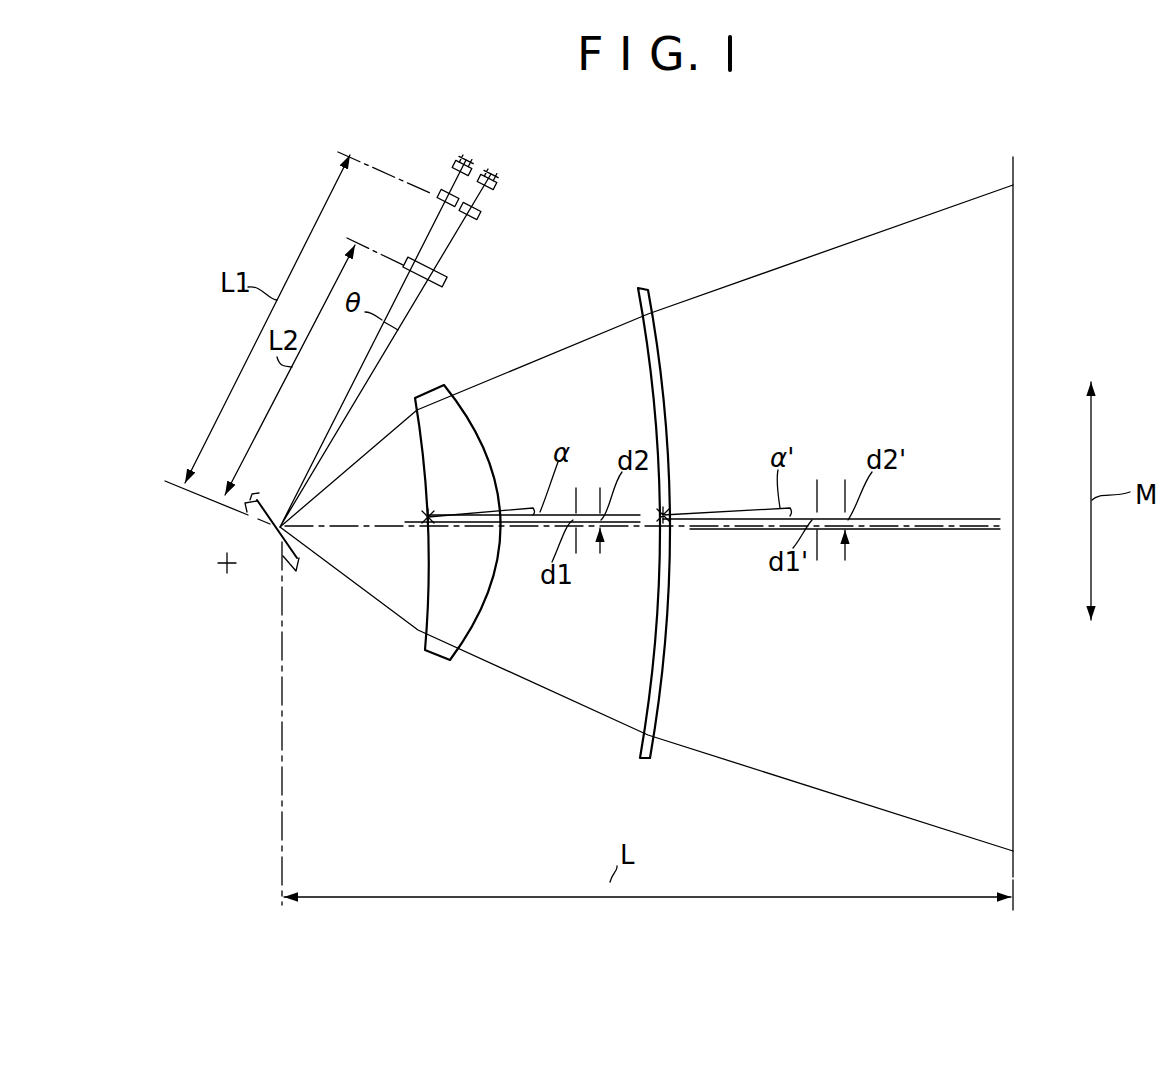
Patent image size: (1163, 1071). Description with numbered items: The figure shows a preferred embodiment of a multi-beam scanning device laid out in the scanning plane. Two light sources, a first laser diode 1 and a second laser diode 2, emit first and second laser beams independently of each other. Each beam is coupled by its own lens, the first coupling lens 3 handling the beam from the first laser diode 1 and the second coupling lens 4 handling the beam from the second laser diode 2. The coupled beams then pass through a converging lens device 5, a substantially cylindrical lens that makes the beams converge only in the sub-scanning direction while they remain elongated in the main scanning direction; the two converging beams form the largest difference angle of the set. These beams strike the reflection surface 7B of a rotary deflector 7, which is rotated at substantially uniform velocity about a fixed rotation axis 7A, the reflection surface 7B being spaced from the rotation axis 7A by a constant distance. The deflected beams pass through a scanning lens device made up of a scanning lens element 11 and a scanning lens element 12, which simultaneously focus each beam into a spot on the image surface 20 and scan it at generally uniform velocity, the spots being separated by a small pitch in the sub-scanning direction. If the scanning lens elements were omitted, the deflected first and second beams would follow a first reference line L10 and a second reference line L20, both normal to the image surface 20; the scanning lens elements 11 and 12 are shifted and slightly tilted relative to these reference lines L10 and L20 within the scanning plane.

The first laser diode 1 is at (500, 184).
The second laser diode 2 is at (453, 163).
The first coupling lens 3 is at (478, 218).
The second coupling lens 4 is at (438, 203).
The converging lens device 5 is at (447, 277).
The rotary deflector 7 is at (262, 500).
The rotation axis 7A is at (222, 568).
The reflection surface 7B is at (298, 565).
The scanning lens element 11 is at (443, 387).
The scanning lens element 12 is at (650, 300).
The image surface 20 is at (1014, 325).
The first reference line L10 is at (868, 528).
The second reference line L20 is at (887, 519).